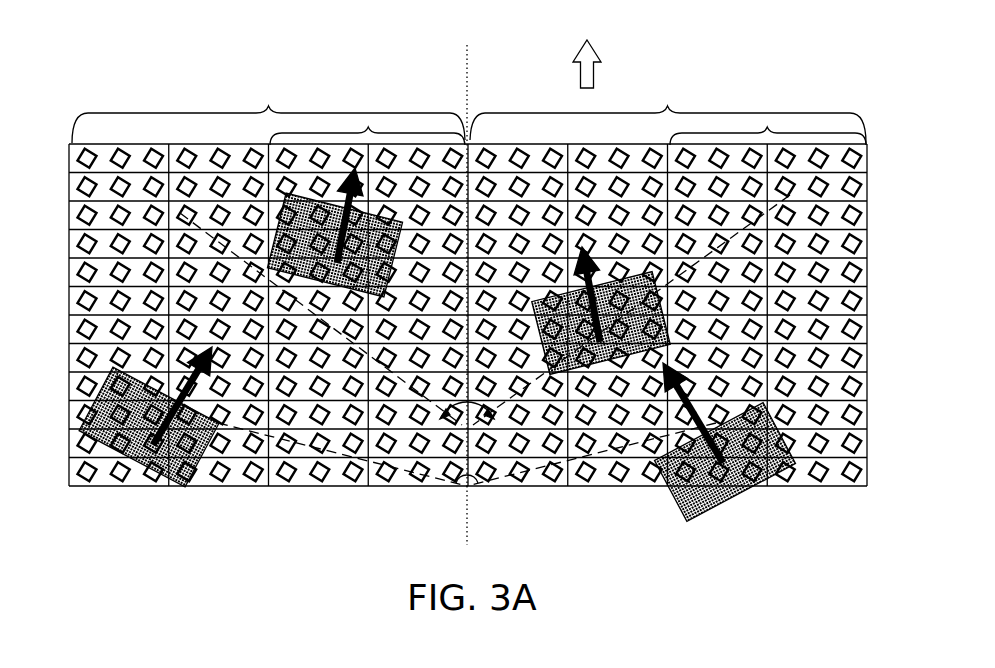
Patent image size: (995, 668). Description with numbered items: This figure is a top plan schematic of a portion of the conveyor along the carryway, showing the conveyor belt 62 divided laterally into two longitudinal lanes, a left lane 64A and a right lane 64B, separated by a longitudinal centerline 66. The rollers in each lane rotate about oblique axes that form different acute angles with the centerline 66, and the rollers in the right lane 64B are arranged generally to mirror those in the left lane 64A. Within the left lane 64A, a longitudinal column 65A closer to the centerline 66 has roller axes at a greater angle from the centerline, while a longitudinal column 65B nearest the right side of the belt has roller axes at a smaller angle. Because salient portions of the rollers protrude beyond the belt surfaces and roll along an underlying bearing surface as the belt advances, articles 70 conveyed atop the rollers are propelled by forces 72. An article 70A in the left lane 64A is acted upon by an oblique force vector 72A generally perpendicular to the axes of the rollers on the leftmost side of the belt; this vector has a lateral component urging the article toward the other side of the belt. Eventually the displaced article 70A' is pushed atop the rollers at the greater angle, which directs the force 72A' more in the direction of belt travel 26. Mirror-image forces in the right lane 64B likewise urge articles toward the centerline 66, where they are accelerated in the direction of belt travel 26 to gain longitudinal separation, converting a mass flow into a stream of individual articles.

The conveyor belt 62 is at (356, 65).
The left lane 64A is at (268, 108).
The right lane 64B is at (669, 110).
The longitudinal column 65A is at (368, 130).
The longitudinal column 65B is at (768, 130).
The longitudinal centerline 66 is at (471, 75).
The direction of belt travel 26 is at (596, 74).
The article 70A is at (145, 450).
The oblique force vector 72A is at (198, 435).
The article 70A' is at (265, 186).
The force 72A' is at (319, 173).
The articles 70 is at (712, 510).
The forces 72 is at (702, 450).